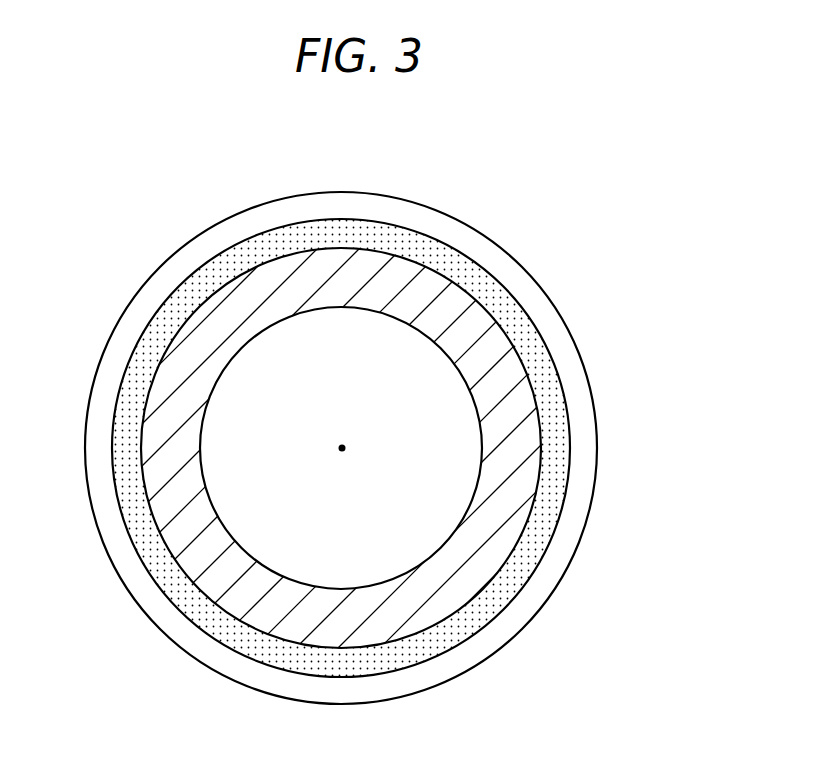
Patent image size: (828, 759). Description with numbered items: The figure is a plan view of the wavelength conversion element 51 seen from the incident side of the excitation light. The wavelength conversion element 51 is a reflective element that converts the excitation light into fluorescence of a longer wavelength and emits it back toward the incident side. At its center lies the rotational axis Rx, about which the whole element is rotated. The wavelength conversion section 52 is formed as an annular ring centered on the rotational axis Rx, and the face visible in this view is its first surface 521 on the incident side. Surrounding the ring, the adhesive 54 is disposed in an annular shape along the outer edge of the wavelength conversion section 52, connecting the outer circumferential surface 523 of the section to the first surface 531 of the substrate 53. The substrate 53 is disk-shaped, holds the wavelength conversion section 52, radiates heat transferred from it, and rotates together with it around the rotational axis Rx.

The wavelength conversion element 51 is at (118, 205).
The wavelength conversion section 52 is at (382, 472).
The first surface 521 is at (455, 588).
The outer circumferential surface 523 is at (515, 558).
The substrate 53 is at (593, 398).
The first surface 531 is at (583, 440).
The adhesive 54 is at (565, 492).
The rotational axis Rx is at (342, 448).